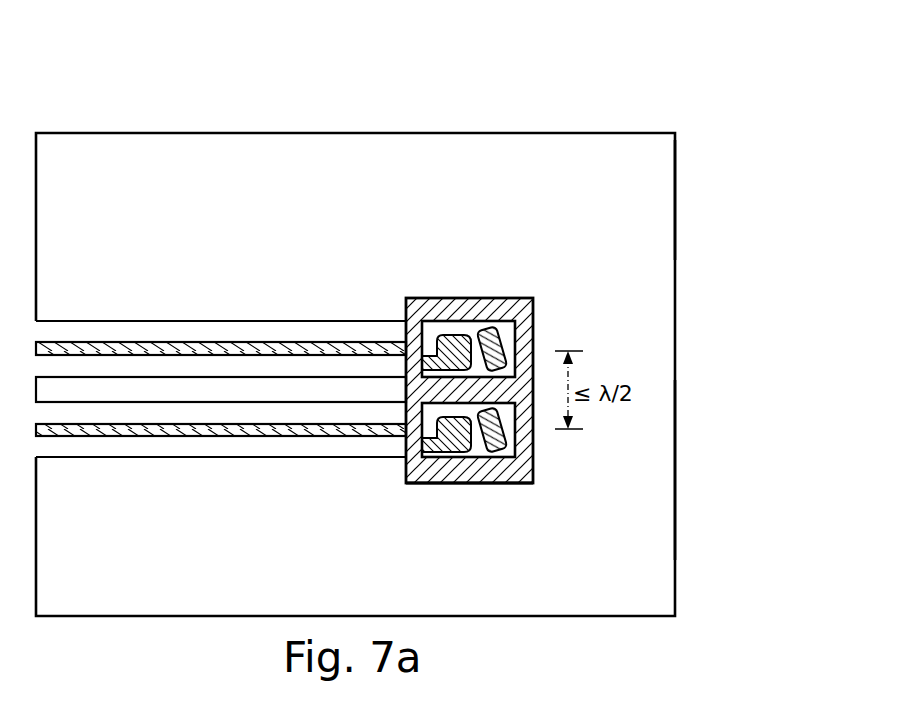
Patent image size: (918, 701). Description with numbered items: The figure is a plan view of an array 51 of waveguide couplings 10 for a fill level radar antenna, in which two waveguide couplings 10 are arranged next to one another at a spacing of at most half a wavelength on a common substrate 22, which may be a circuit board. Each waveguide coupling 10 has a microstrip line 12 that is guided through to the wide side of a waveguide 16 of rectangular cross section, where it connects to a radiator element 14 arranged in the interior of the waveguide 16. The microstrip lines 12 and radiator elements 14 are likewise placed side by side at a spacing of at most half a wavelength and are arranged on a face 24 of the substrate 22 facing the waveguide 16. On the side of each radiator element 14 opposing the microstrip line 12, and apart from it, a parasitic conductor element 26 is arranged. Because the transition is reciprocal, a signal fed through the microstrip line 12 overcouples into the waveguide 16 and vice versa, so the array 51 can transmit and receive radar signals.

The array of waveguide couplings 51 is at (634, 116).
The face of the substrate 24 is at (663, 252).
The substrate 22 is at (686, 445).
The microstrip line 12 is at (186, 346).
The waveguide coupling 10 is at (548, 314).
The radiator element 14 is at (452, 318).
The conductor element 26 is at (483, 314).
The waveguide 16 is at (471, 493).